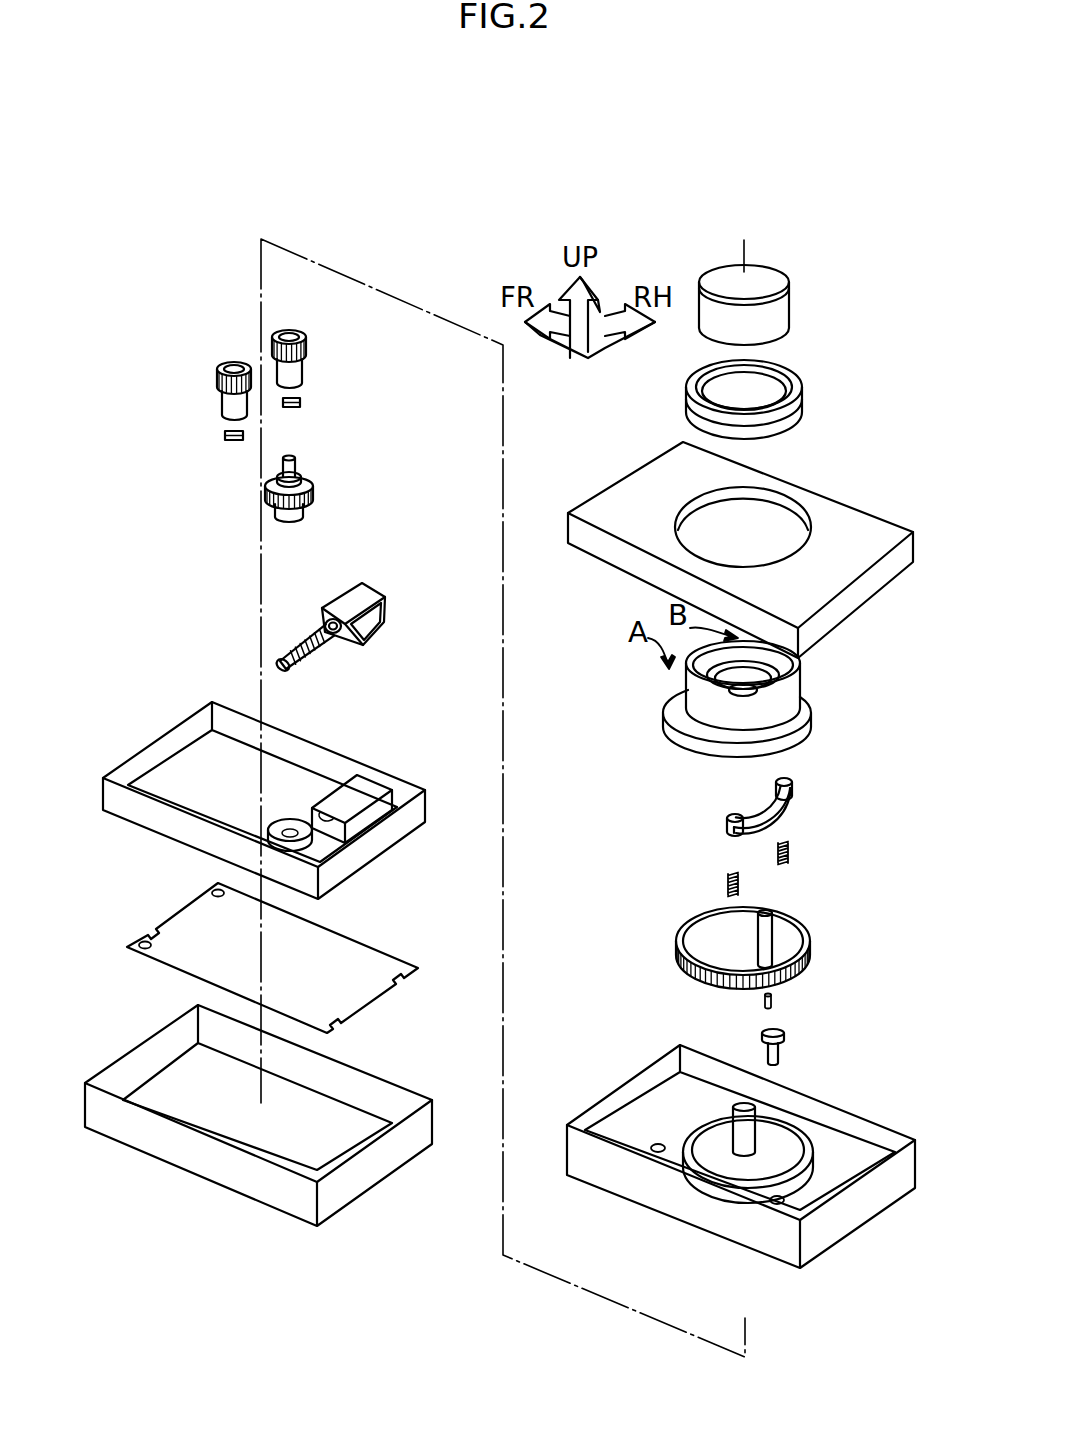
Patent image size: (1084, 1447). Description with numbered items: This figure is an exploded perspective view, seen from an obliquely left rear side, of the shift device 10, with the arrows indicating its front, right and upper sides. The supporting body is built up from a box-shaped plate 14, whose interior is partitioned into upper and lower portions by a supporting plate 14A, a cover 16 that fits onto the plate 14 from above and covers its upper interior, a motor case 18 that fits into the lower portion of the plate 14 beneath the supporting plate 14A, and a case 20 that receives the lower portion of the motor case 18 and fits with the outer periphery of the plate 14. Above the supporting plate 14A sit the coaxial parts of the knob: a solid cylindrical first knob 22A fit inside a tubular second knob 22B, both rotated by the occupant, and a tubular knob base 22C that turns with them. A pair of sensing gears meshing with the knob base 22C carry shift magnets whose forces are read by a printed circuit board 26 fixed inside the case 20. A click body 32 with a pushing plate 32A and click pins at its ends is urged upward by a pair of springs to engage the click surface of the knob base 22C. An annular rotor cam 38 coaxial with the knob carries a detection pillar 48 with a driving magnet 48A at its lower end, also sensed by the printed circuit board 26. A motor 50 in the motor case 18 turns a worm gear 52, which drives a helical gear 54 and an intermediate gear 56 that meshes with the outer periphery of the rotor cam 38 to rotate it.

The shift device 10 is at (121, 313).
The plate 14 is at (818, 1094).
The supporting plate 14A is at (648, 1117).
The cover 16 is at (852, 512).
The motor case 18 is at (176, 720).
The case 20 is at (158, 1028).
The first knob 22A is at (790, 306).
The second knob 22B is at (802, 400).
The knob base 22C is at (806, 696).
The printed circuit board 26 is at (170, 914).
The click body 32 is at (796, 798).
The pushing plate 32A is at (795, 826).
The rotor cam 38 is at (806, 968).
The detection pillar 48 is at (777, 945).
The driving magnet 48A is at (774, 1000).
The motor 50 is at (383, 588).
The worm gear 52 is at (312, 664).
The helical gear 54 is at (314, 490).
The intermediate gear 56 is at (784, 1038).